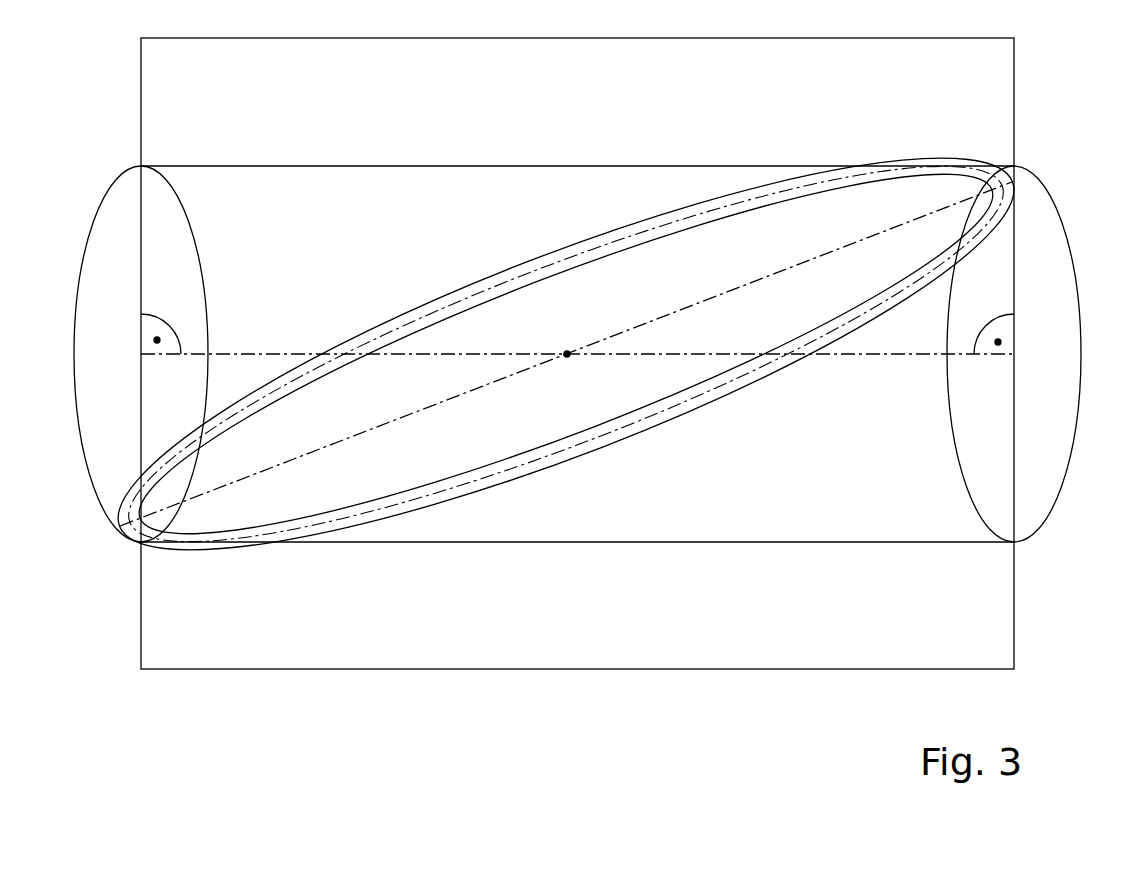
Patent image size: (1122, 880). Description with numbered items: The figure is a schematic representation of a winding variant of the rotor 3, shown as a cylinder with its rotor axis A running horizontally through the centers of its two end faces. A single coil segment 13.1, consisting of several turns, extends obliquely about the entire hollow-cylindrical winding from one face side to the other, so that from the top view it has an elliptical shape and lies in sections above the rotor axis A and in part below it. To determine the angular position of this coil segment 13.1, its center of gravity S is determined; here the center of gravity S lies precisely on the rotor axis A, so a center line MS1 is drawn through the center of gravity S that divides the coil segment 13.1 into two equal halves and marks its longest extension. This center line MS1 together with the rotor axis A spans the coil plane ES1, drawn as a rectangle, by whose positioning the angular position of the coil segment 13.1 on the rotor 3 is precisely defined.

The rotor 3 is at (537, 560).
The coil segment 13.1 is at (355, 524).
The center of gravity S is at (567, 350).
The center line MS1 is at (723, 292).
The coil plane ES1 is at (615, 652).
The rotor axis A is at (1013, 356).